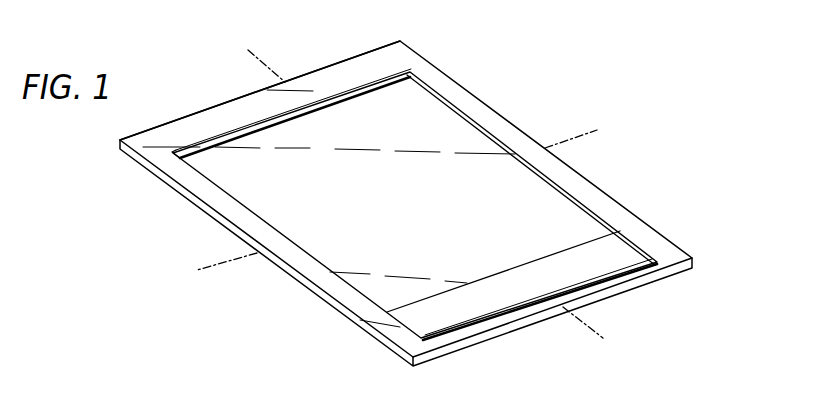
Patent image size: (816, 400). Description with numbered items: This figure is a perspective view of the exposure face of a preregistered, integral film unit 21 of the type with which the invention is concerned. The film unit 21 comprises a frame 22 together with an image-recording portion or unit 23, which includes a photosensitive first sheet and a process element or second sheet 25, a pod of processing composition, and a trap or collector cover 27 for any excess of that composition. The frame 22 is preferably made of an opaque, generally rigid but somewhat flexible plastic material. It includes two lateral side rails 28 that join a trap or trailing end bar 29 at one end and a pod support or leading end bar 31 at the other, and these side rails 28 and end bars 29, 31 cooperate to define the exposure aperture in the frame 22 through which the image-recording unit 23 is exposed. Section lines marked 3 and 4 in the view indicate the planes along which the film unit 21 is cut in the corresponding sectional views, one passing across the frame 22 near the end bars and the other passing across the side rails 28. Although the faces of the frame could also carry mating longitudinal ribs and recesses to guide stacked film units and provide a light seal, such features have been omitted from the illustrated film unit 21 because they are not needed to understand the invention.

The film unit 21 is at (417, 189).
The frame 22 is at (660, 220).
The image-recording unit 23 is at (424, 110).
The second sheet 25 is at (336, 264).
The trap cover 27 is at (187, 119).
The lateral side rails 28 is at (490, 117).
The trailing end bar 29 is at (327, 75).
The leading end bar 31 is at (650, 270).
The section line 3- 3 is at (248, 50).
The section line 4- 4 is at (197, 270).